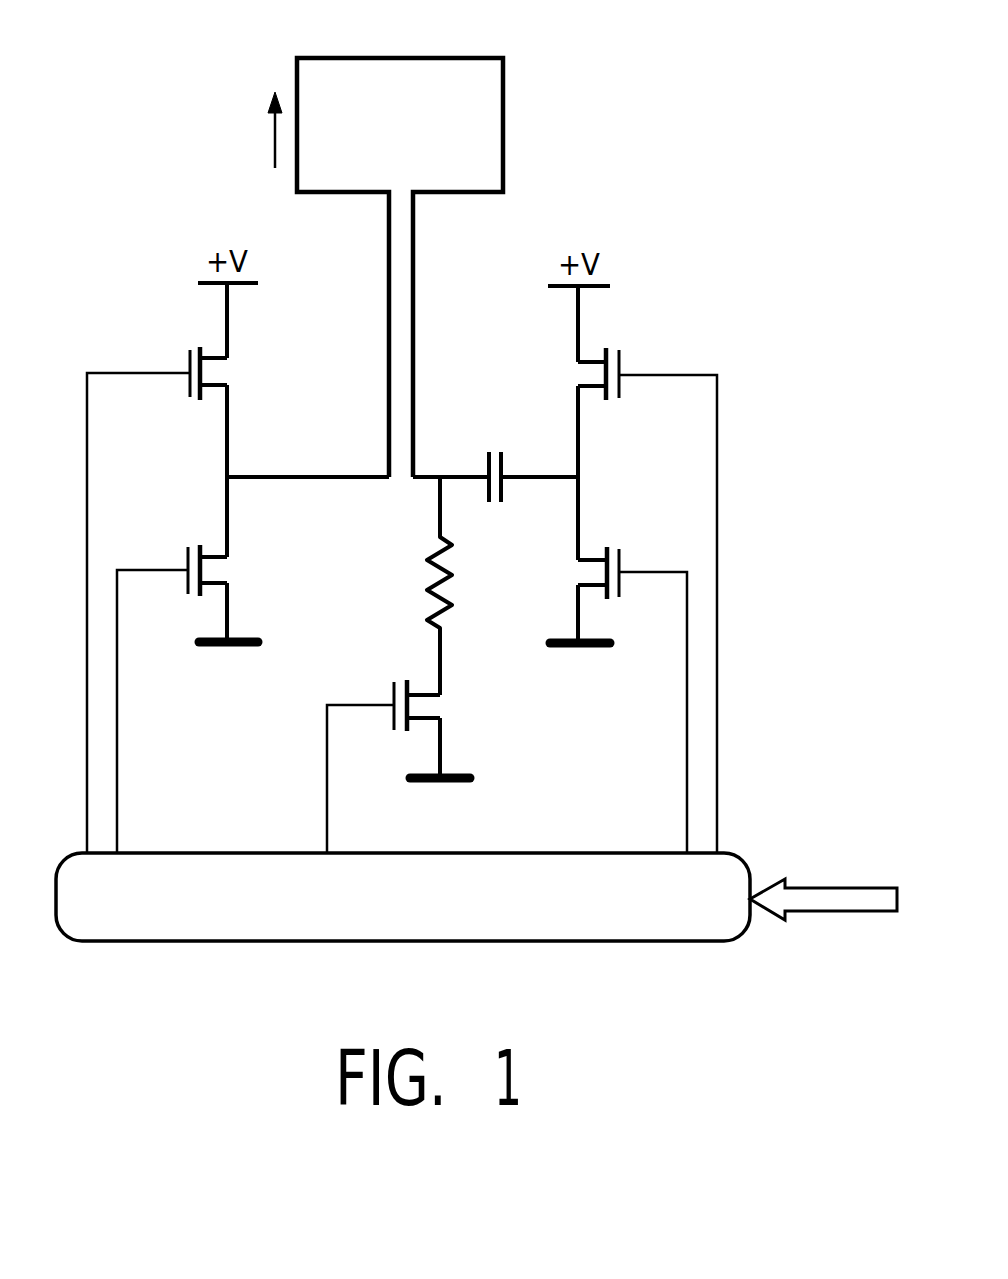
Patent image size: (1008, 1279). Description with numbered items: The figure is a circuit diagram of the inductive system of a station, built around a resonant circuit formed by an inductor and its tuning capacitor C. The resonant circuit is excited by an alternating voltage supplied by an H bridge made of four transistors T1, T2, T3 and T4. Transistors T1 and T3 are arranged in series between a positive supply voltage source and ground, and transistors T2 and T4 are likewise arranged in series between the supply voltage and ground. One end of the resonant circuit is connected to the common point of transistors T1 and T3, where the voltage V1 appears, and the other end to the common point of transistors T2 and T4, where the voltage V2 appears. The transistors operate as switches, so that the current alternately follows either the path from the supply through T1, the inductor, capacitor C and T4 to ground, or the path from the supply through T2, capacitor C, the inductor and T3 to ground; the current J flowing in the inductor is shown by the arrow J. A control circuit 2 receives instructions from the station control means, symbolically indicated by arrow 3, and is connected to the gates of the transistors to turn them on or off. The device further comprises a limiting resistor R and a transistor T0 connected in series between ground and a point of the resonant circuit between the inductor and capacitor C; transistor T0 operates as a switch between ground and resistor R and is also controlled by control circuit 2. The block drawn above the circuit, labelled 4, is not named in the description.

The control circuit 2 is at (578, 942).
The arrow 3 is at (850, 886).
The load / current block 4 is at (503, 92).
The transistor T0 is at (383, 760).
The transistor T1 is at (157, 593).
The transistor T2 is at (647, 593).
The transistor T3 is at (172, 692).
The transistor T4 is at (632, 693).
The tuning capacitor C is at (457, 459).
The limiting resistor R is at (453, 586).
The voltage V1 is at (308, 459).
The voltage V2 is at (539, 459).
The current J is at (265, 130).